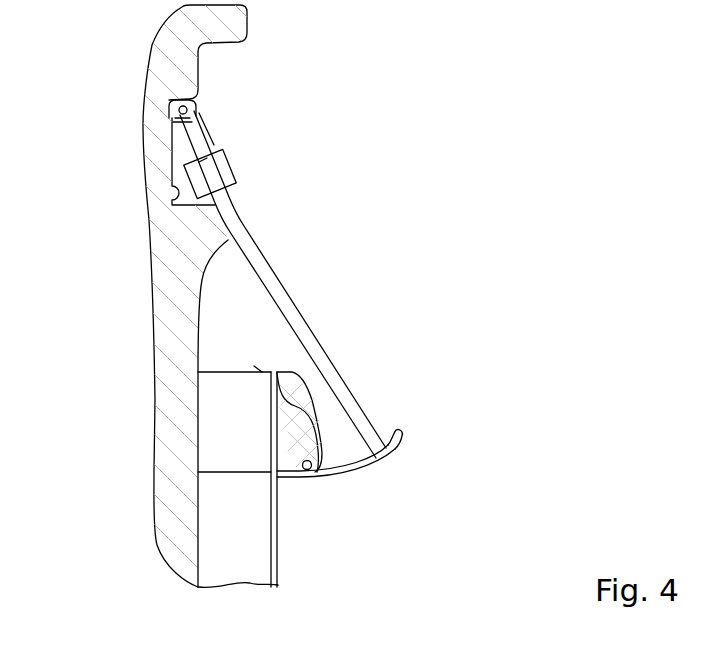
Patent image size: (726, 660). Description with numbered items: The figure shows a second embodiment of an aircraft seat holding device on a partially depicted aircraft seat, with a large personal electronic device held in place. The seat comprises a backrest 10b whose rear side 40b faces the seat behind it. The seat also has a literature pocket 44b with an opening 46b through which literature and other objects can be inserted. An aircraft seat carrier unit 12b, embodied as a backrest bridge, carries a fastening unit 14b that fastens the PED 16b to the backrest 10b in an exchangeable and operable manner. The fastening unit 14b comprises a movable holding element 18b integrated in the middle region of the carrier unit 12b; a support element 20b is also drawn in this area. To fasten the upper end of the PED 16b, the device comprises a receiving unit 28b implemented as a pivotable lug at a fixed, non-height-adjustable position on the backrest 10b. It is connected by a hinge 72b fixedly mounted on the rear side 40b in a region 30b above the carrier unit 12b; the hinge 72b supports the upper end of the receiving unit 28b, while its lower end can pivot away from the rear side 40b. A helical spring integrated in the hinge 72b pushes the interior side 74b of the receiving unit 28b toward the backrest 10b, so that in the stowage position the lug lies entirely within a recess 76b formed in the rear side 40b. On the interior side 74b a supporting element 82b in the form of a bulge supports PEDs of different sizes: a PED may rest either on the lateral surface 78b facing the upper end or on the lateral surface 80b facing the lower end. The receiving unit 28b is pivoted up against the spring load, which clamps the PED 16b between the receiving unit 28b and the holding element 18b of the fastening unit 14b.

The backrest 10b is at (167, 57).
The aircraft seat carrier unit 12b is at (285, 438).
The fastening unit 14b is at (353, 480).
The PED 16b is at (317, 278).
The holding element 18b is at (372, 477).
The support element 20b is at (402, 445).
The receiving unit 28b is at (194, 138).
The region 30b is at (326, 165).
The rear side 40b is at (204, 322).
The literature pocket 44b is at (233, 404).
The opening 46b is at (254, 360).
The hinge 72b is at (107, 195).
The interior side 74b is at (172, 151).
The recess 76b is at (182, 186).
The lateral surface 78b is at (213, 150).
The lateral surface 80b is at (226, 185).
The supporting element 82b is at (205, 160).